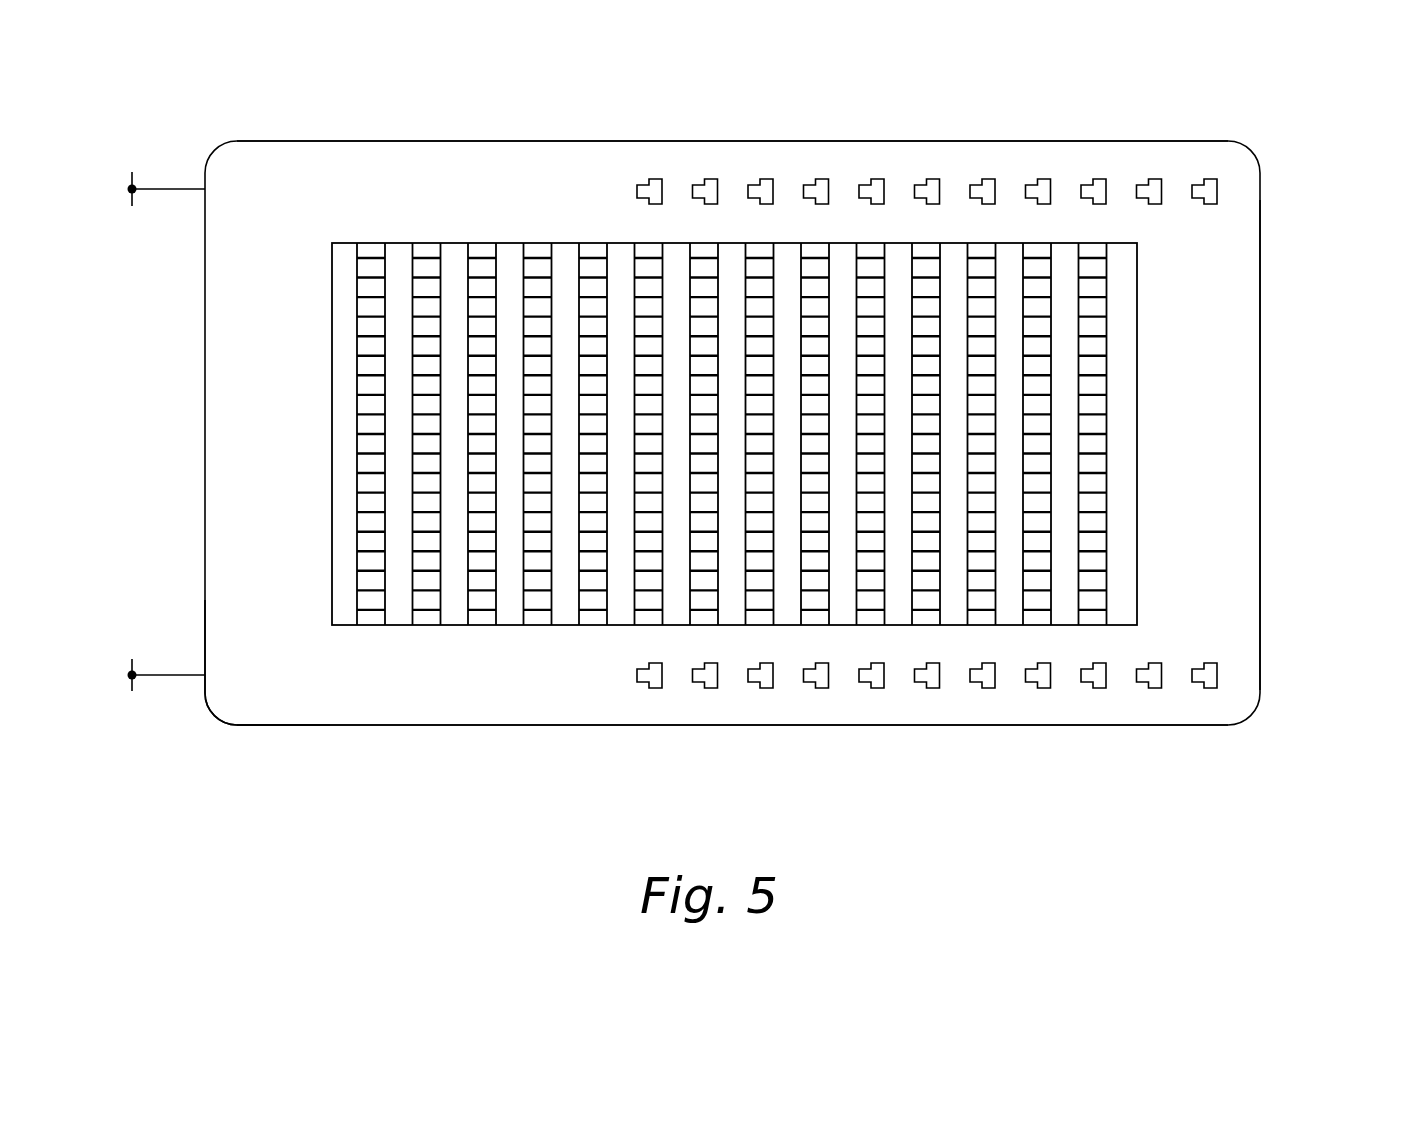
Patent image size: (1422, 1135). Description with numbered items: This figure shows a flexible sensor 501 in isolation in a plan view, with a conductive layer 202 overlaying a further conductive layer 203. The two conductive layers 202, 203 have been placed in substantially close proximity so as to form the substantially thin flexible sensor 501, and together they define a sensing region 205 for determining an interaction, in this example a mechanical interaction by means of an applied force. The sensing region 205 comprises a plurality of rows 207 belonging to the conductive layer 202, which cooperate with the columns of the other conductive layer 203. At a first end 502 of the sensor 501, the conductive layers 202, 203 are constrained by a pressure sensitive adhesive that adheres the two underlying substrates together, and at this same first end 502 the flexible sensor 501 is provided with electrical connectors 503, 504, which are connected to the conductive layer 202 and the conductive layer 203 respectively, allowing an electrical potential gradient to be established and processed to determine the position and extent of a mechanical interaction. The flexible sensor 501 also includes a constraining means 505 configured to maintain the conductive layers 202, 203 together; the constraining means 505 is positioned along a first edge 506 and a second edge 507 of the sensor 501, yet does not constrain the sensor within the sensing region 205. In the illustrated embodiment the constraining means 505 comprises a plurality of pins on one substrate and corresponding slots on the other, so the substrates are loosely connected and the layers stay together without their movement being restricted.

The flexible sensor 501 is at (1290, 121).
The first end 502 is at (220, 725).
The electrical connector 503 is at (132, 675).
The electrical connector 504 is at (132, 189).
The constraining means 505 is at (877, 179).
The first edge 506 is at (963, 726).
The second edge 507 is at (747, 141).
The plurality of rows 207 is at (993, 243).
The sensing region 205 is at (1079, 320).
The conductive layer 202 is at (1247, 373).
The conductive layer 203 is at (1247, 510).